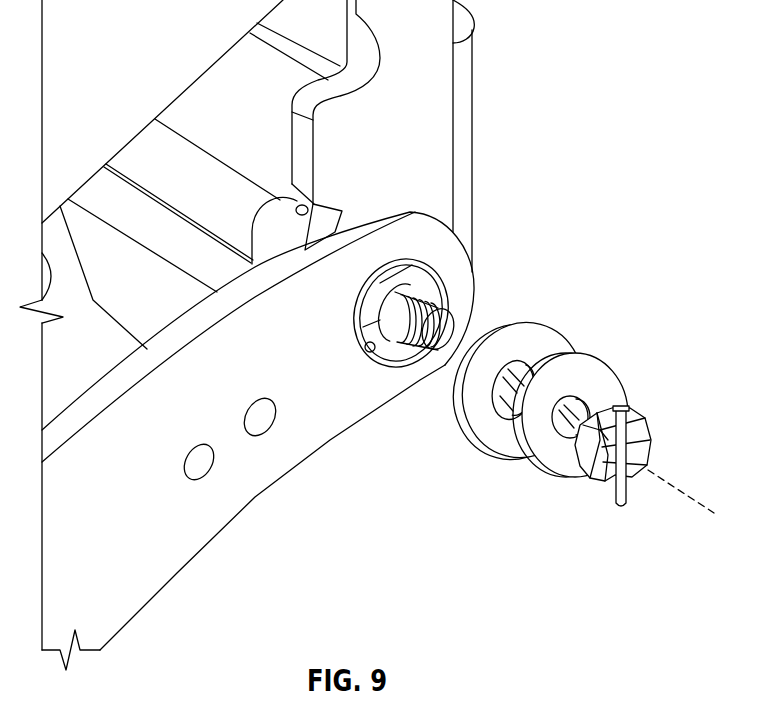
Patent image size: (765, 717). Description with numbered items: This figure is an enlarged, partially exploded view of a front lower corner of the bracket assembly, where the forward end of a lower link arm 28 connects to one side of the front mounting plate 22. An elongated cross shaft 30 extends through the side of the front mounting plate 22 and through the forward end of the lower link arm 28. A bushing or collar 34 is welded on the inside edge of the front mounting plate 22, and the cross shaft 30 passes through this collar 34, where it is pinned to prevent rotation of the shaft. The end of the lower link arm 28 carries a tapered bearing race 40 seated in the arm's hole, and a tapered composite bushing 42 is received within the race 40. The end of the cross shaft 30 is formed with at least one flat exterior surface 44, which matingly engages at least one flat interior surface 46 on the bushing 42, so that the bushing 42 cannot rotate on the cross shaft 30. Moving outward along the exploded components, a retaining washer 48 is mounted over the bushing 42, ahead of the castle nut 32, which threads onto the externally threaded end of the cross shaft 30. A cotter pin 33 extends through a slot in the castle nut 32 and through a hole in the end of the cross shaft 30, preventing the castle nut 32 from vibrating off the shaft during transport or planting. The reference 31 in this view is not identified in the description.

The front mounting plate 22 is at (463, 127).
The lower link arm 28 is at (257, 477).
The cross shaft 30 is at (197, 157).
The threaded bolt 31 is at (415, 353).
The castle nut 32 is at (630, 413).
The cotter pin 33 is at (613, 496).
The collar 34 is at (281, 200).
The tapered bearing race 40 is at (369, 364).
The tapered composite bushing 42 is at (490, 443).
The flat exterior surface 44 is at (390, 282).
The flat interior surface 46 is at (545, 324).
The retaining washer 48 is at (597, 367).